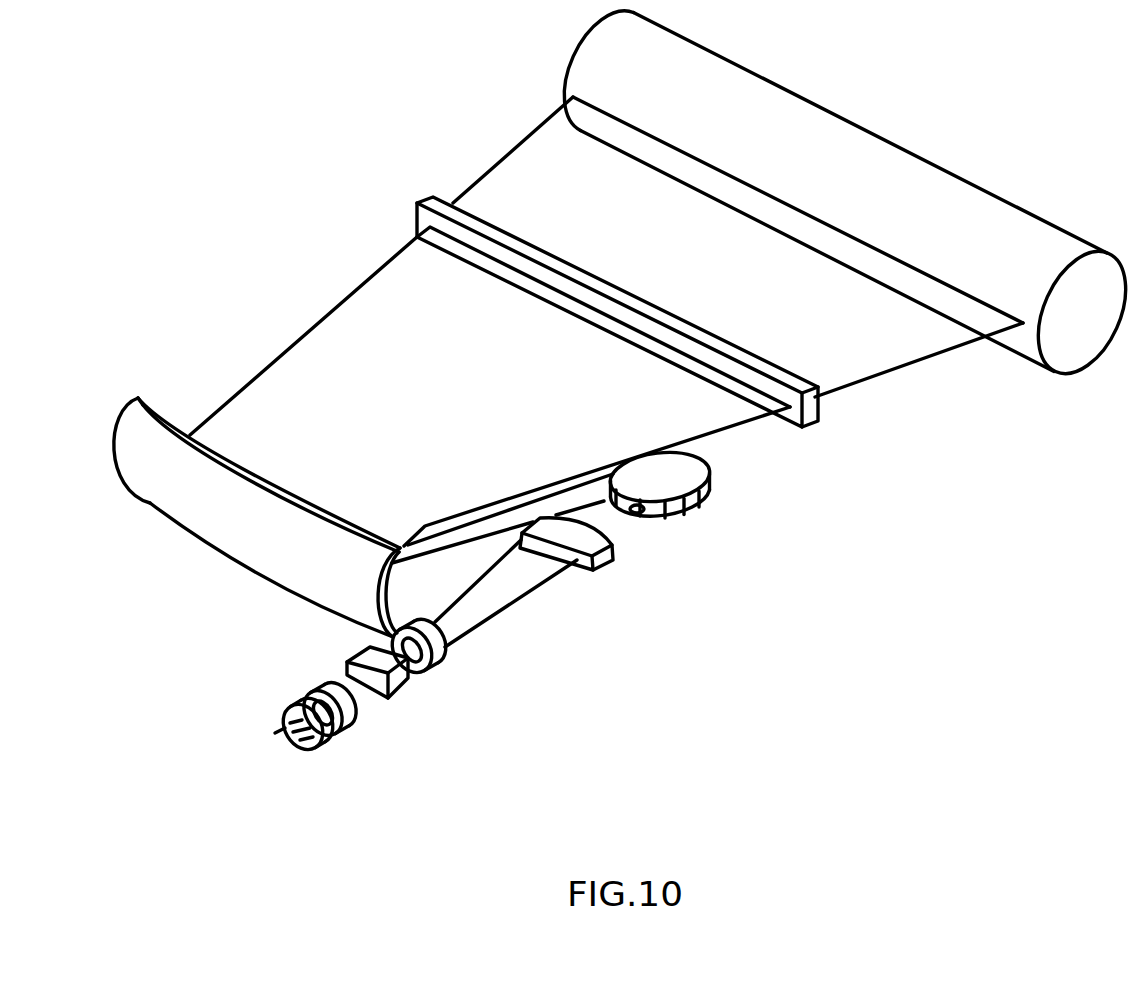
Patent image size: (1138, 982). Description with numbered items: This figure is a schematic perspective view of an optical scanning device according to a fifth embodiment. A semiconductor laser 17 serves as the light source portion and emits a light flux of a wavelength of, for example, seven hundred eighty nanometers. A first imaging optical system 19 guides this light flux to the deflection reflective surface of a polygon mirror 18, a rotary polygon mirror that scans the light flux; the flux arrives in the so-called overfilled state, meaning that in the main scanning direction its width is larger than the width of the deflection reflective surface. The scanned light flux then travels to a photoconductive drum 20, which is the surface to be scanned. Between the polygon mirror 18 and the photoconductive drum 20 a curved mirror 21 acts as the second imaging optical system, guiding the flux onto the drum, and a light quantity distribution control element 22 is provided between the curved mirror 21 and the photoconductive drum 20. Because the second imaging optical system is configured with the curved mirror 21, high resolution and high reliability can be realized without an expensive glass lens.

The semiconductor laser 17 is at (337, 738).
The polygon mirror 18 is at (691, 513).
The first imaging optical system 19 is at (640, 566).
The photoconductive drum 20 is at (902, 168).
The curved mirror 21 is at (170, 499).
The light quantity distribution control element 22 is at (433, 202).